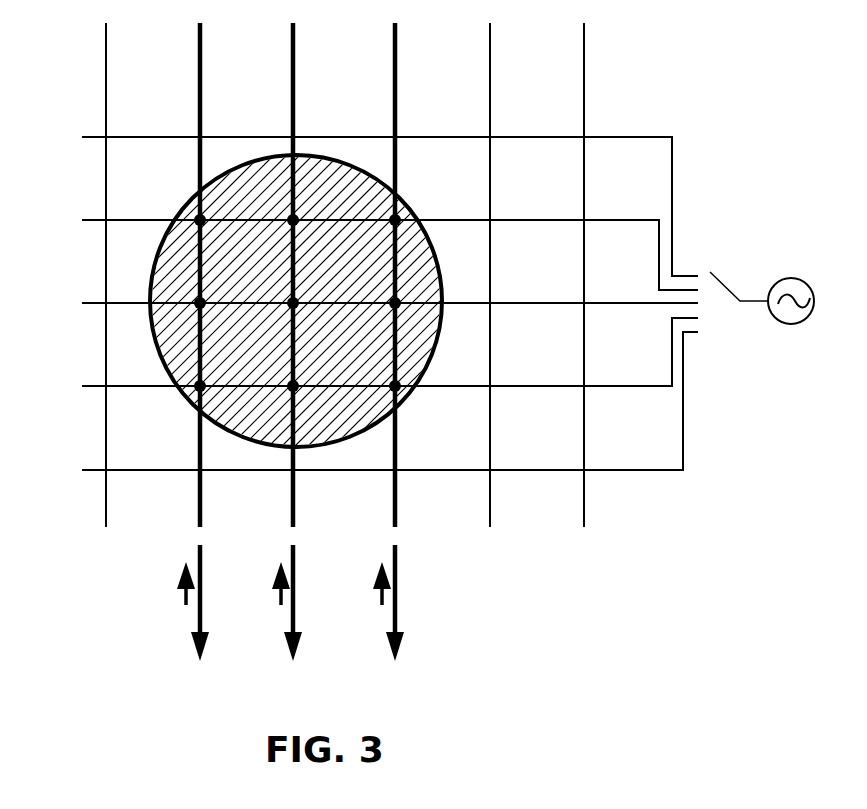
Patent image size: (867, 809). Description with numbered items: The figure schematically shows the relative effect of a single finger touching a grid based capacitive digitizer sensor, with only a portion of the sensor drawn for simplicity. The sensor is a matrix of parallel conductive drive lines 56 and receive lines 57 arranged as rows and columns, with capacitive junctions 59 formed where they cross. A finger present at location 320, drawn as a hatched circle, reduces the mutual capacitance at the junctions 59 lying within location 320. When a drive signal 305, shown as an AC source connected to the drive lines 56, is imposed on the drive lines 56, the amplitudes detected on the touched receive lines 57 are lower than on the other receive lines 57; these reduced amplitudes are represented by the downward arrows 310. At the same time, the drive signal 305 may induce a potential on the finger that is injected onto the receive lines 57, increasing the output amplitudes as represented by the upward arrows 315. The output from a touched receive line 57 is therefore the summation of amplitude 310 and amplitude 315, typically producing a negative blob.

The drive lines 56 is at (636, 137).
The receive lines 57 is at (107, 498).
The junctions 59 is at (196, 216).
The drive signal 305 is at (752, 300).
The arrows representing reduced amplitudes 310 is at (203, 608).
The arrows representing increased amplitudes 315 is at (182, 600).
The finger location 320 is at (360, 172).